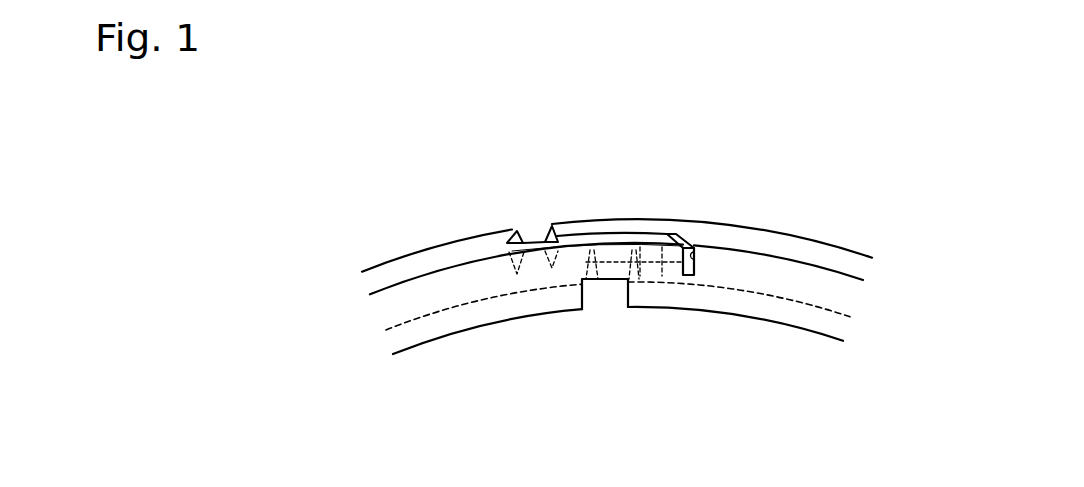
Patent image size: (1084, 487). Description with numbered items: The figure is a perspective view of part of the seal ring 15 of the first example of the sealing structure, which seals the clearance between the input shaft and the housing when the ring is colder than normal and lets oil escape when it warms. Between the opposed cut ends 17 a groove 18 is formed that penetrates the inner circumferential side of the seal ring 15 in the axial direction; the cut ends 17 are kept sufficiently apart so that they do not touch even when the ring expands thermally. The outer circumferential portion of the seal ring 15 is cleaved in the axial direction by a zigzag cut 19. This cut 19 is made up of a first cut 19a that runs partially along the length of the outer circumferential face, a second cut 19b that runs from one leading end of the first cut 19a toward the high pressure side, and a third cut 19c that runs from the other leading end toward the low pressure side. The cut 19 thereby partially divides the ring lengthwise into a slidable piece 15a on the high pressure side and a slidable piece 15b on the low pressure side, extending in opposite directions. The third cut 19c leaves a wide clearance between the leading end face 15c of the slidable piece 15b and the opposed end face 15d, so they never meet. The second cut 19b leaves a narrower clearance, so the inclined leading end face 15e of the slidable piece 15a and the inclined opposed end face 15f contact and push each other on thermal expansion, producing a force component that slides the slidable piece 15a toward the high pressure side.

The seal ring 15 is at (874, 241).
The slidable piece 15a is at (641, 237).
The slidable piece 15b is at (657, 230).
The leading end face 15c is at (549, 229).
The end face 15d is at (517, 230).
The leading end face 15e is at (688, 241).
The end face 15f is at (696, 257).
The cut ends 17 is at (628, 290).
The groove 18 is at (618, 320).
The cut 19 is at (601, 201).
The first cut 19a is at (617, 229).
The second cut 19b is at (693, 277).
The third cut 19c is at (528, 238).